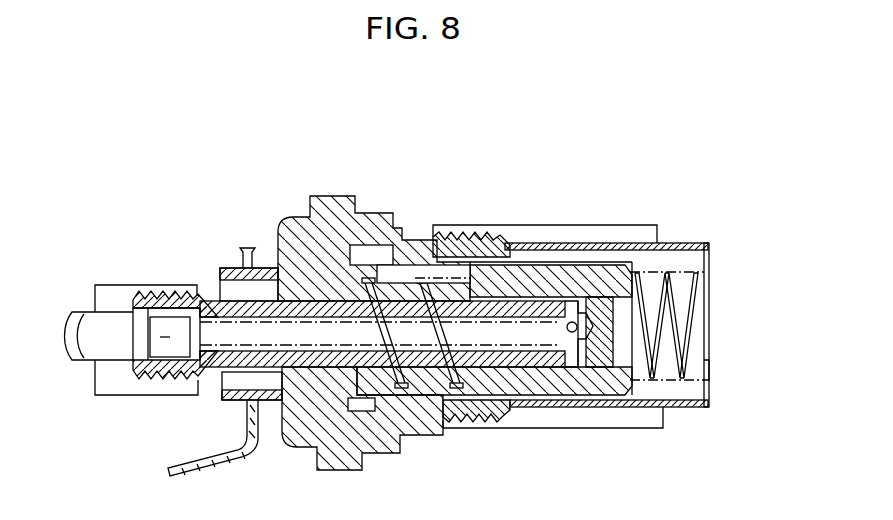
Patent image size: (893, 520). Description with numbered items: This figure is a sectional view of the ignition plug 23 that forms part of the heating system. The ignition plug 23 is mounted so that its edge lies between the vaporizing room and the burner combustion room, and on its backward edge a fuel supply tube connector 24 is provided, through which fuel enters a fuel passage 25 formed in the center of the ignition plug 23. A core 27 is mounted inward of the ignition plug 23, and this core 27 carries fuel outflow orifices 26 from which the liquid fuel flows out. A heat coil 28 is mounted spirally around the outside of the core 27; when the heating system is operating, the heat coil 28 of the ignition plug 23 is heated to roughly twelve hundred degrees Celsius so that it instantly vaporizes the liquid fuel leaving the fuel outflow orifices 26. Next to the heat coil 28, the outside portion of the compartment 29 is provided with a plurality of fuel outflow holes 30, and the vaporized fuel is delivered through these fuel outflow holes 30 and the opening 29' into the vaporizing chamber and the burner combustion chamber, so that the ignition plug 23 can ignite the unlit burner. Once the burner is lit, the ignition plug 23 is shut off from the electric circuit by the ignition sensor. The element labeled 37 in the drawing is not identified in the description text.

The ignition plug 23 is at (524, 221).
The fuel supply tube connector 24 is at (176, 300).
The fuel passage 25 is at (267, 343).
The fuel outflow orifices 26 is at (571, 337).
The core 27 is at (507, 358).
The heat coil 28 is at (690, 373).
The compartment 29 is at (720, 284).
The opening 29' is at (752, 399).
The fuel outflow holes 30 is at (640, 245).
The cable 37 is at (88, 318).